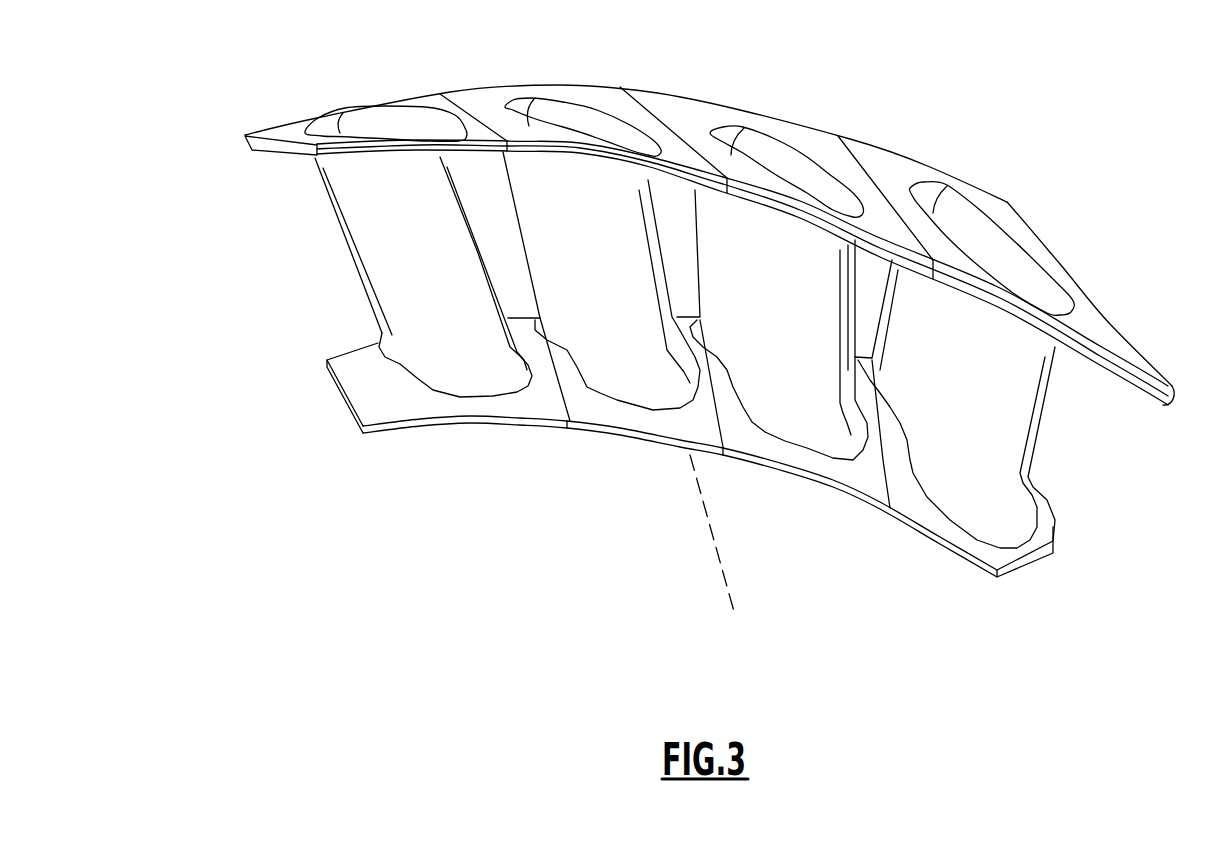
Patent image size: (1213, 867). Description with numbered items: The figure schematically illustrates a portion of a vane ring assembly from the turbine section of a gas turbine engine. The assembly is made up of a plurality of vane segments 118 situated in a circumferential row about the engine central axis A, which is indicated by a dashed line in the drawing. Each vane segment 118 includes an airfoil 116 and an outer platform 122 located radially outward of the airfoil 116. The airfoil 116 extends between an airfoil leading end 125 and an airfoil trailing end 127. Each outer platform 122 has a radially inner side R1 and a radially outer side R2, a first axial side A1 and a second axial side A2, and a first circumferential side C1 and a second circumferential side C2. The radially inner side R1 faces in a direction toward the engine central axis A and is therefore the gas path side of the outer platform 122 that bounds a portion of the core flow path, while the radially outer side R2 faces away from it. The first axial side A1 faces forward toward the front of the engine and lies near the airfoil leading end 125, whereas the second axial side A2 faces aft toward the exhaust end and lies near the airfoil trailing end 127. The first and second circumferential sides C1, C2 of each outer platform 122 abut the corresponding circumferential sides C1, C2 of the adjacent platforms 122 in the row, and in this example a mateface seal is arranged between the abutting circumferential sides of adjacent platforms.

The airfoil 116 is at (410, 316).
The vane segment 118 is at (608, 447).
The outer platform 122 is at (297, 134).
The airfoil leading end 125 is at (503, 363).
The airfoil trailing end 127 is at (373, 305).
The engine central axis A is at (712, 553).
The radially inner side R1 is at (309, 157).
The radially outer side R2 is at (302, 125).
The first axial side A1 is at (373, 150).
The second axial side A2 is at (268, 131).
The first circumferential side C1 is at (255, 145).
The second circumferential side C2 is at (472, 113).